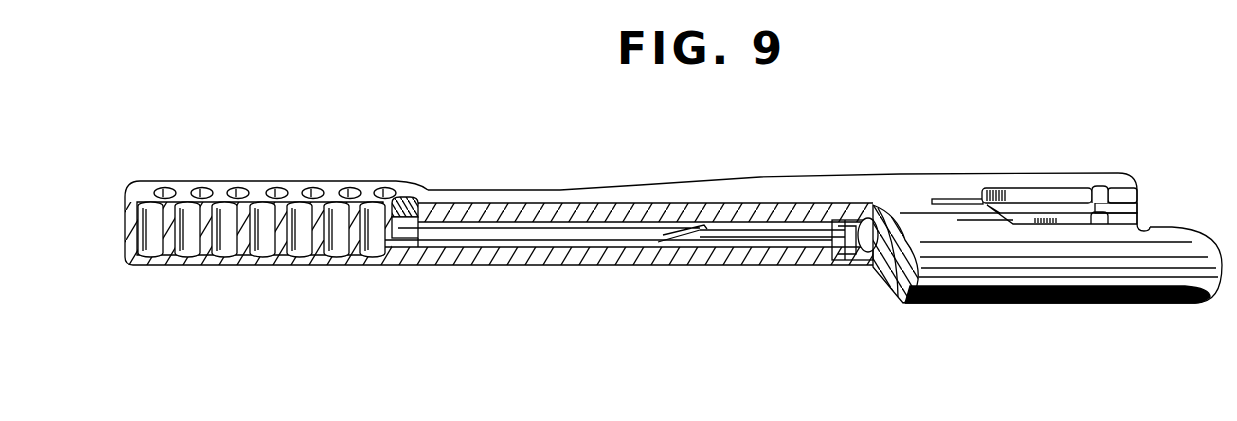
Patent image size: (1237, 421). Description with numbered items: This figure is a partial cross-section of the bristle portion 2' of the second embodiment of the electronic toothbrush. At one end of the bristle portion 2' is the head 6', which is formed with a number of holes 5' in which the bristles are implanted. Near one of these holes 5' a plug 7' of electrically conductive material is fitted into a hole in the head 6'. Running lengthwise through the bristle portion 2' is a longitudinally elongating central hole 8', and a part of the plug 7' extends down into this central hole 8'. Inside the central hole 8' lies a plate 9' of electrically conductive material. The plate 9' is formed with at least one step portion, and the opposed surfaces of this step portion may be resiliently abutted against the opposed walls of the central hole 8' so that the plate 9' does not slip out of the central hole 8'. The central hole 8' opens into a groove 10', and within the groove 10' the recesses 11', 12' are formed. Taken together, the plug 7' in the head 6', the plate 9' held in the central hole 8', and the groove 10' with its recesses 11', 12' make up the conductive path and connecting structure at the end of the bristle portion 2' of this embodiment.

The bristle portion 2' is at (276, 274).
The holes 5' is at (258, 190).
The head 6' is at (275, 152).
The plug 7' is at (408, 190).
The central hole 8' is at (552, 190).
The plate 9' is at (741, 199).
The groove 10' is at (1054, 224).
The recess 11' is at (1018, 176).
The recess 12' is at (1111, 165).